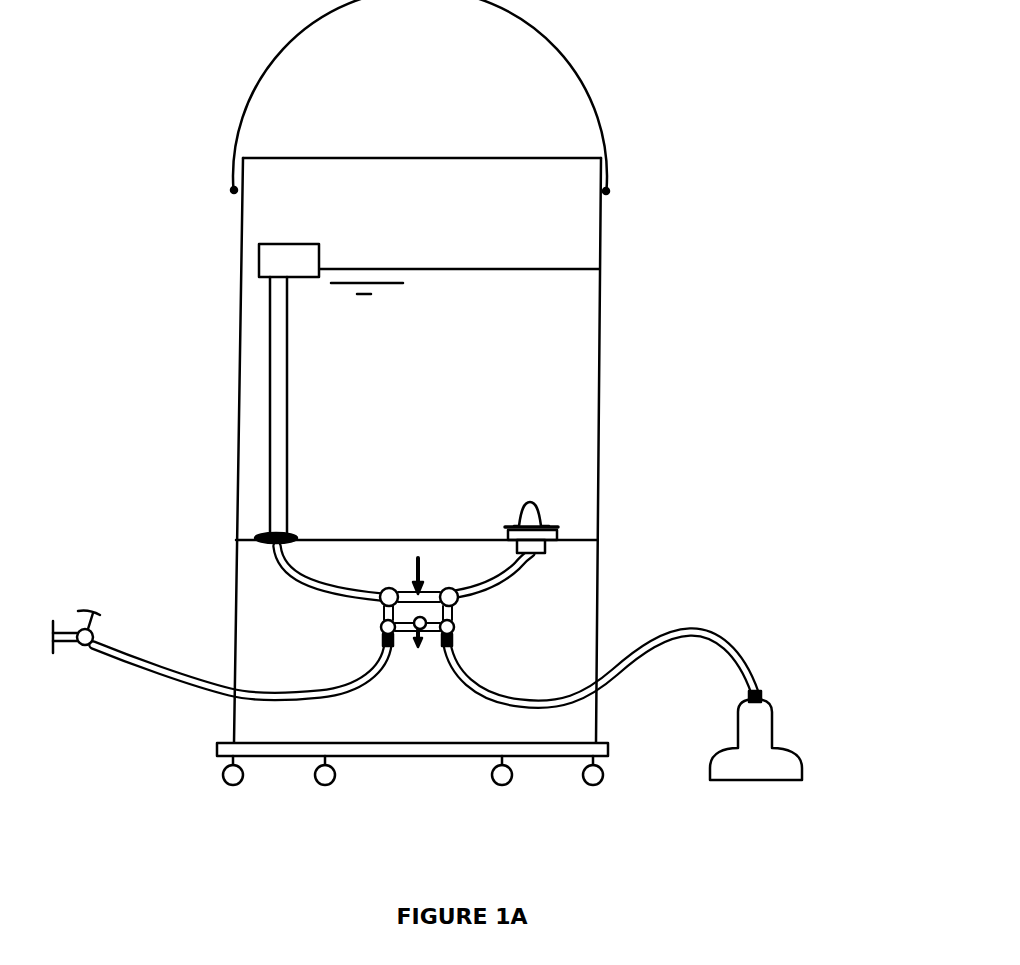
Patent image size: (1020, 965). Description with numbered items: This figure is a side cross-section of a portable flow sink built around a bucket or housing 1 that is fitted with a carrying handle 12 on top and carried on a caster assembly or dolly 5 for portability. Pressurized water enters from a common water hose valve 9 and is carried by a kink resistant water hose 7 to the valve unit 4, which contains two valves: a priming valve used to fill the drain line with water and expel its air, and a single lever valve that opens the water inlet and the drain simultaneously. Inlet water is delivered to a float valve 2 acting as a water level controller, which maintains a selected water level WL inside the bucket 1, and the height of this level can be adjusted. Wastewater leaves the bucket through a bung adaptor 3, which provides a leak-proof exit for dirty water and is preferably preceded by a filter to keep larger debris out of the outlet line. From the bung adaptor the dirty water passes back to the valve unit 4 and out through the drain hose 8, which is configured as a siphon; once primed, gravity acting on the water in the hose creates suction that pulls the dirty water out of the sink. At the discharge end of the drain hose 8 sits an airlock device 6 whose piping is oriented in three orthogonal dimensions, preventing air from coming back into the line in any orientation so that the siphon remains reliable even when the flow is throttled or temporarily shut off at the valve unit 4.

The bucket/housing 1 is at (603, 240).
The float valve 2 is at (258, 257).
The bung adaptor 3 is at (562, 525).
The valve unit 4 is at (455, 585).
The caster assembly or dolly 5 is at (215, 745).
The airlock device 6 is at (777, 740).
The kink resistant water hose 7 is at (350, 677).
The drain hose 8 is at (715, 633).
The water hose valve 9 is at (95, 634).
The carrying handle 12 is at (575, 80).
The water level WL is at (543, 270).